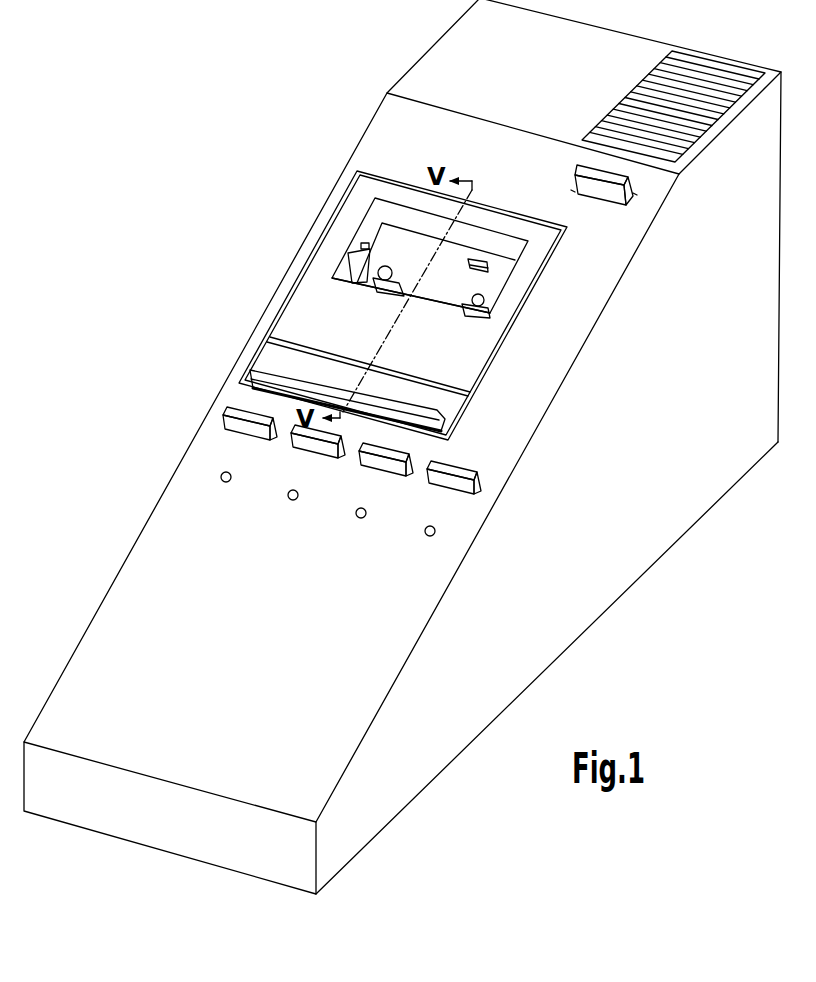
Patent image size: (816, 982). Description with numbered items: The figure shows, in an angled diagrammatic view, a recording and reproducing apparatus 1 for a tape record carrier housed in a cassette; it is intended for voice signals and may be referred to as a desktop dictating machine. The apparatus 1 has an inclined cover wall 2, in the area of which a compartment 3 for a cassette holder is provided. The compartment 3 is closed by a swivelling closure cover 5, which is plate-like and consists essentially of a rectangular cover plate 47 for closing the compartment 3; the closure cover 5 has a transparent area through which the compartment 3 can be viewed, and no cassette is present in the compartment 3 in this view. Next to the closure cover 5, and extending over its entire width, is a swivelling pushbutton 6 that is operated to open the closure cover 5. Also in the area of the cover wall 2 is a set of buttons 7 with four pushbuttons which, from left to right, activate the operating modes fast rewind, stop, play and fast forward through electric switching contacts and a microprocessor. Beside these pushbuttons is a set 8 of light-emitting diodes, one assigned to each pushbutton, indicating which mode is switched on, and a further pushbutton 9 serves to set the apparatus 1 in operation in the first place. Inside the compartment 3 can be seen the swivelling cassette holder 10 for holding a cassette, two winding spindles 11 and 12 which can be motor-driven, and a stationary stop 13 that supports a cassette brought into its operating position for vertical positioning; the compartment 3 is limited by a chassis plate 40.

The recording and reproducing apparatus 1 is at (402, 447).
The inclined cover wall 2 is at (126, 581).
The compartment 3 is at (388, 212).
The swivelling closure cover 5 is at (290, 281).
The swivelling pushbutton 6 is at (251, 356).
The set of buttons 7 is at (218, 427).
The set of light-emitting diodes 8 is at (209, 473).
The pushbutton 9 is at (608, 190).
The swivelling cassette holder 10 is at (364, 244).
The winding spindle 11 is at (386, 281).
The winding spindle 12 is at (484, 313).
The stationary stop 13 is at (489, 268).
The chassis plate 40 is at (439, 283).
The rectangular cover plate 47 is at (471, 373).